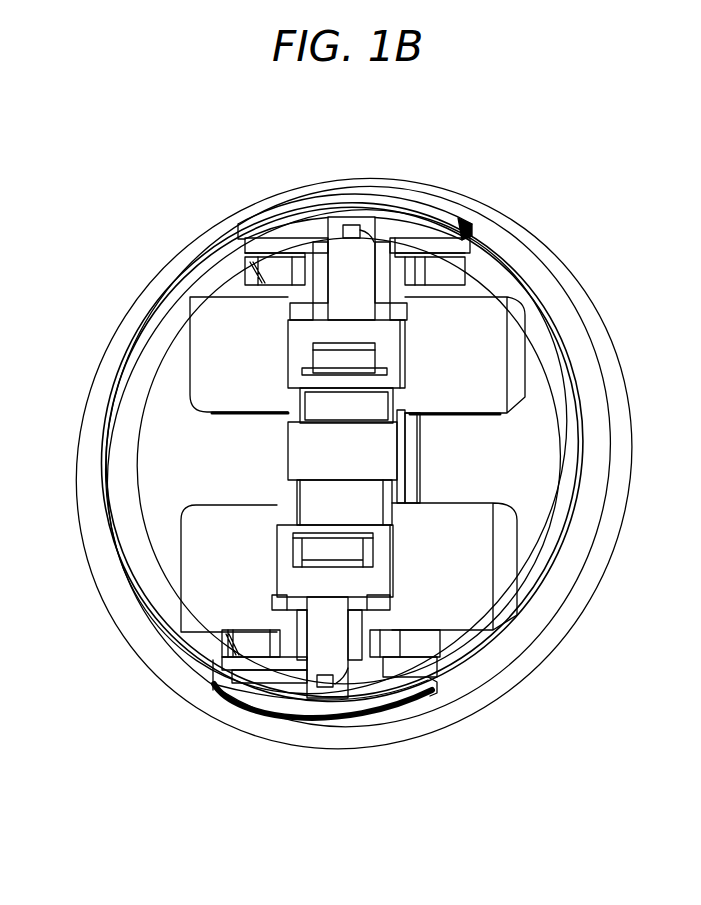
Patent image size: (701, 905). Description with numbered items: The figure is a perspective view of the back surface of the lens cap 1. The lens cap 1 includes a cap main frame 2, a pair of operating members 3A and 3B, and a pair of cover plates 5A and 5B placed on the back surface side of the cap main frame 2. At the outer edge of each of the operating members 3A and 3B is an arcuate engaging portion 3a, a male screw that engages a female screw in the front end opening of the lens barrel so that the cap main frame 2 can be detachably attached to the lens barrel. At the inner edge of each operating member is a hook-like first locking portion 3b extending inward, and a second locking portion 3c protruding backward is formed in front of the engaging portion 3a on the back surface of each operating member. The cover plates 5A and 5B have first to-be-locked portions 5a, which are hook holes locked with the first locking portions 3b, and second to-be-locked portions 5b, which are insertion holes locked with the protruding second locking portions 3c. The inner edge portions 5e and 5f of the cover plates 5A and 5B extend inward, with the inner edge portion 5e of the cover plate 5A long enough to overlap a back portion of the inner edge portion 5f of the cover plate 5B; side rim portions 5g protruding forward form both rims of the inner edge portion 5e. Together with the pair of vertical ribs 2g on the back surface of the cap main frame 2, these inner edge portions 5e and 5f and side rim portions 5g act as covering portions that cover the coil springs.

The lens cap 1 is at (562, 249).
The cap main frame 2 is at (627, 400).
The vertical ribs 2g is at (418, 478).
The operating member 3A is at (385, 258).
The operating member 3B is at (262, 662).
The engaging portion 3a is at (420, 205).
The first locking portion 3b is at (333, 363).
The second locking portion 3c is at (352, 221).
The cover plate 5A is at (250, 465).
The cover plate 5B is at (290, 572).
The first to-be-locked portion 5a is at (373, 340).
The second to-be-locked portion 5b is at (343, 228).
The inner edge portion 5e is at (307, 452).
The inner edge portion 5f is at (322, 498).
The side rim portions 5g is at (402, 440).